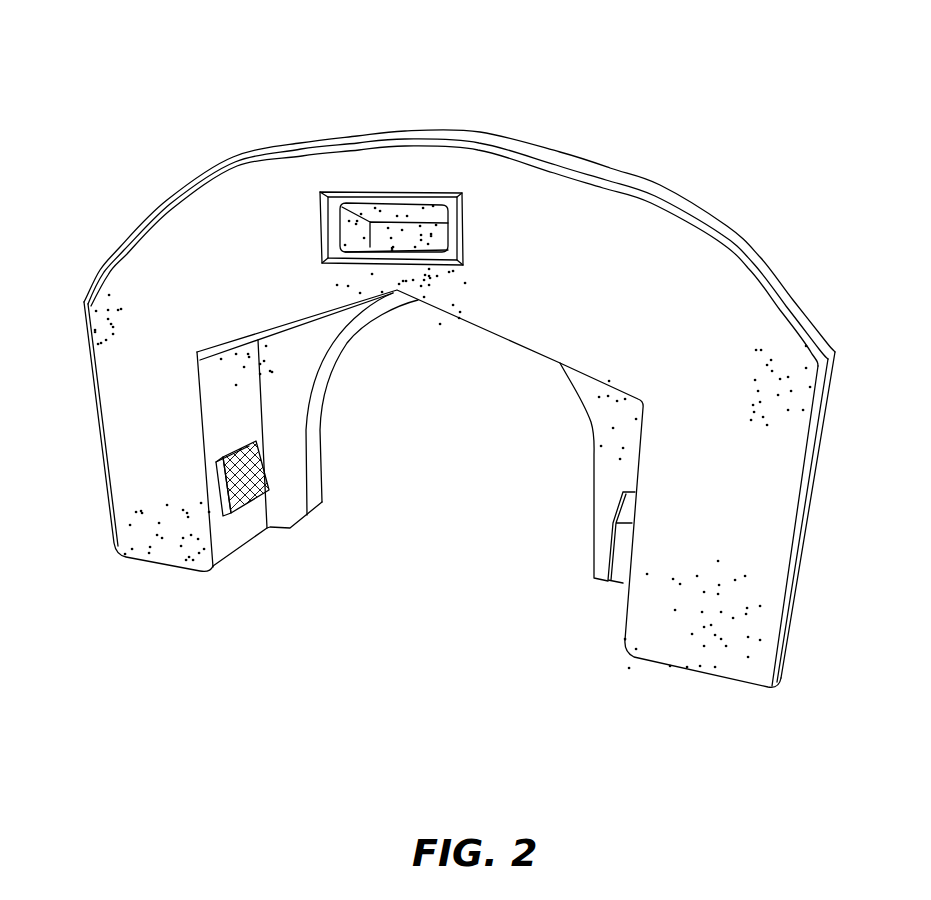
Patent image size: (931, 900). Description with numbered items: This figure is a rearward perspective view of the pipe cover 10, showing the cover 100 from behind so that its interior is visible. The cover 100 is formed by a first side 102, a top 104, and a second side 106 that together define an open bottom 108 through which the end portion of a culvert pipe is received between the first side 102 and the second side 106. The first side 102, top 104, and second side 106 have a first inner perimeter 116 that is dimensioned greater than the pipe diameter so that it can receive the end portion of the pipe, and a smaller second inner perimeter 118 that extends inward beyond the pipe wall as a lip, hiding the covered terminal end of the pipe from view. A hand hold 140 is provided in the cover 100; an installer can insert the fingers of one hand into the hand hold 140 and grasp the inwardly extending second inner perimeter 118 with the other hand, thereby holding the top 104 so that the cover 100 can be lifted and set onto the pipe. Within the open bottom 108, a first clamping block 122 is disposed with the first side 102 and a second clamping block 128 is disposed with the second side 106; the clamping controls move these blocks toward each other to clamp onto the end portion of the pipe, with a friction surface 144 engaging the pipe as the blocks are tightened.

The pipe cover 10 is at (203, 64).
The cover 100 is at (150, 258).
The first side 102 is at (783, 537).
The top 104 is at (565, 218).
The second side 106 is at (112, 477).
The open bottom 108 is at (387, 507).
The first inner perimeter 116 is at (560, 363).
The second inner perimeter 118 is at (588, 422).
The first clamping block 122 is at (627, 553).
The second clamping block 128 is at (230, 512).
The hand hold 140 is at (402, 210).
The friction surface 144 is at (612, 549).